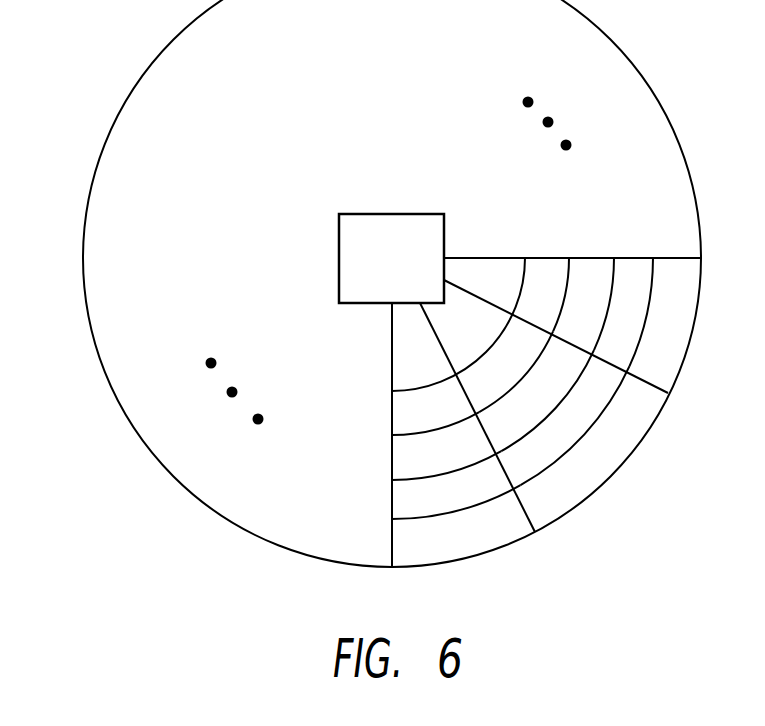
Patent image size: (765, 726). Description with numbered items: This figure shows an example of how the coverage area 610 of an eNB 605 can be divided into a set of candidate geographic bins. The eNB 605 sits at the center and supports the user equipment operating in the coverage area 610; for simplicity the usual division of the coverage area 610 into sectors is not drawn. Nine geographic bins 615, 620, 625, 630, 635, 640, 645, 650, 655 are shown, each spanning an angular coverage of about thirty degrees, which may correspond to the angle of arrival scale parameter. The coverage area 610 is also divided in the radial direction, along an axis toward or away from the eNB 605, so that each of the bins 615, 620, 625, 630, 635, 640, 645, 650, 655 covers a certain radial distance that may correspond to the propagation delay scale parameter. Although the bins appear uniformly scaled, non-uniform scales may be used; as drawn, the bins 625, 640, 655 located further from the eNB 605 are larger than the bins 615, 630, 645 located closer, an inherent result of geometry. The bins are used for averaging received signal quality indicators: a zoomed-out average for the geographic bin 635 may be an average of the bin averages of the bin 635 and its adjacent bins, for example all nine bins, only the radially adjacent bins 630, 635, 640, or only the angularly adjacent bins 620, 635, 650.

The eNB 605 is at (365, 213).
The coverage area 610 is at (93, 294).
The geographic bin 615 is at (400, 417).
The geographic bin 620 is at (400, 462).
The geographic bin 625 is at (403, 503).
The geographic bin 630 is at (508, 348).
The geographic bin 635 is at (533, 415).
The geographic bin 640 is at (598, 393).
The geographic bin 645 is at (549, 266).
The geographic bin 650 is at (592, 266).
The geographic bin 655 is at (638, 266).